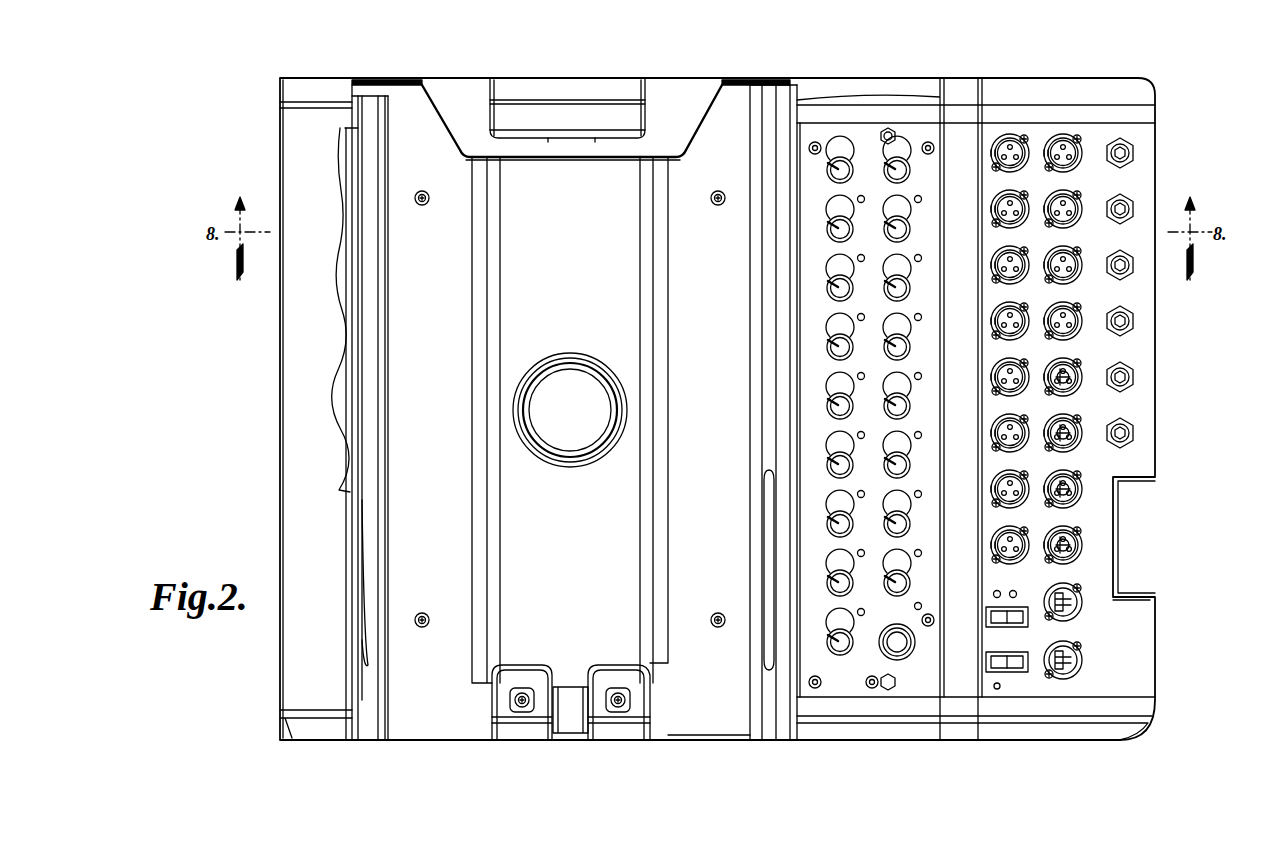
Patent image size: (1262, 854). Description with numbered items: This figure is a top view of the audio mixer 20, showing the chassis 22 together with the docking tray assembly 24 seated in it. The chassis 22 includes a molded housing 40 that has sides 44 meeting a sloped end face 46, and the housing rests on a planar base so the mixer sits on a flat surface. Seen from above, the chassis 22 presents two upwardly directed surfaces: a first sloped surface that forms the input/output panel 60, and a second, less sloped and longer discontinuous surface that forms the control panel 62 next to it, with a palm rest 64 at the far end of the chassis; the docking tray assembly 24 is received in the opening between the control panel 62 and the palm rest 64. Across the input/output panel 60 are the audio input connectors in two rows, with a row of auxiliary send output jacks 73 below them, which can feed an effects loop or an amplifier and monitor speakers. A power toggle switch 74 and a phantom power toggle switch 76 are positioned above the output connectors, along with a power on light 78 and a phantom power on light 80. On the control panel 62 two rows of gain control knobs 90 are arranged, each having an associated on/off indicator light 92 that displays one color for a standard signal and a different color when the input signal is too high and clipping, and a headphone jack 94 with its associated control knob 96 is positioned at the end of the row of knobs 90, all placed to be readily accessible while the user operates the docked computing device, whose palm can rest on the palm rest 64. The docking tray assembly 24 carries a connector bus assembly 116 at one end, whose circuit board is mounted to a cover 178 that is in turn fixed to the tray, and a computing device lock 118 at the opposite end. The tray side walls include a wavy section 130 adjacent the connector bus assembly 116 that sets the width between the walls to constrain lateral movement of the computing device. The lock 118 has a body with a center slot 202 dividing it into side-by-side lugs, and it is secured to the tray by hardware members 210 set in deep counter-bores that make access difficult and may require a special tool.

The audio mixer 20 is at (182, 98).
The chassis 22 is at (735, 75).
The docking tray assembly 24 is at (732, 741).
The molded housing 40 is at (870, 700).
The sides 44 is at (848, 92).
The sloped end face 46 is at (1160, 310).
The input/output panel 60 is at (1070, 602).
The control panel 62 is at (850, 686).
The palm rest 64 is at (300, 430).
The auxiliary send output jacks 73 is at (1135, 153).
The power toggle switch 74 is at (1070, 660).
The phantom power toggle switch 76 is at (1140, 635).
The power on light 78 is at (1025, 548).
The phantom power on light 80 is at (1013, 594).
The gain control knobs 90 is at (905, 585).
The indicator hole 92 is at (918, 608).
The headphone jack 94 is at (905, 655).
The control knob 96 is at (840, 648).
The connector bus assembly 116 is at (548, 75).
The computing device lock 118 is at (592, 741).
The wavy wall section 130 is at (352, 335).
The cover 178 is at (587, 92).
The center slot 202 is at (570, 727).
The hardware members 210 is at (622, 705).